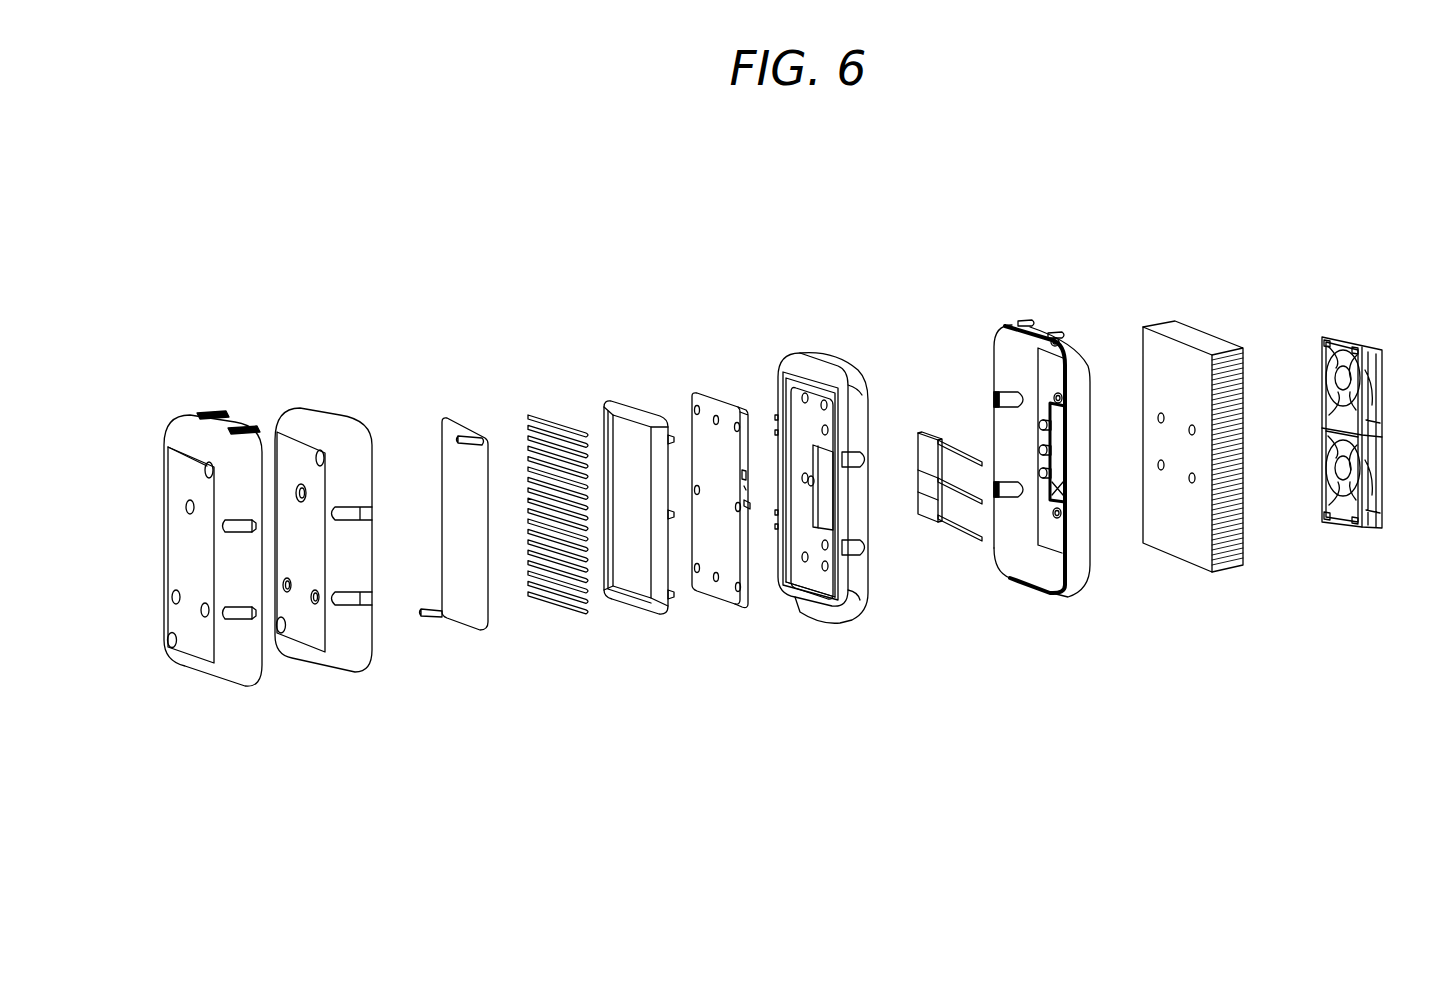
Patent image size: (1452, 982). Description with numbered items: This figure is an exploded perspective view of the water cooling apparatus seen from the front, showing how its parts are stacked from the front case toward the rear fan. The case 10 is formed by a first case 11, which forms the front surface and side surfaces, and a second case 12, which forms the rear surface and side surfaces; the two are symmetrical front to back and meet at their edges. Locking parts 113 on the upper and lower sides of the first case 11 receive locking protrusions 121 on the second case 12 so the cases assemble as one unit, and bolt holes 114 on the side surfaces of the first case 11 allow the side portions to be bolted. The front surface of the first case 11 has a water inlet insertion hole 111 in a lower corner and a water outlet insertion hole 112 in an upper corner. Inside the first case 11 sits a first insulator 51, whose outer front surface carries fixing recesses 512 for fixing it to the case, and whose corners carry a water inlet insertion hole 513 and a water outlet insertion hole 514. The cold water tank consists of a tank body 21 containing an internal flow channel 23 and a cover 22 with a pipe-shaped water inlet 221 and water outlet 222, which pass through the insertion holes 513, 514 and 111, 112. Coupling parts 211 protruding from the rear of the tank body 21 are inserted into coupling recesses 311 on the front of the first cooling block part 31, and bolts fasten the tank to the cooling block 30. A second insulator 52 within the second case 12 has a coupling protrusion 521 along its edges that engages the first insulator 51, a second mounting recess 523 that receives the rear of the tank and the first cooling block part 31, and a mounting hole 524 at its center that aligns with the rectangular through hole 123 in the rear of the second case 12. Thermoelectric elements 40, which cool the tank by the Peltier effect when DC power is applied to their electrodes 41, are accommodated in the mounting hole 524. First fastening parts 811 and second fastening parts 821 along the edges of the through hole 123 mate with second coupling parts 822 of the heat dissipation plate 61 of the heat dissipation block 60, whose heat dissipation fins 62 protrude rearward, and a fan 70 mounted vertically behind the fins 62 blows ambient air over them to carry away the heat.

The case 10 is at (170, 539).
The first case 11 is at (162, 455).
The water inlet insertion hole 111 is at (167, 639).
The water outlet insertion hole 112 is at (206, 473).
The locking part 113 is at (244, 427).
The bolt hole 114 is at (242, 620).
The second case 12 is at (1015, 454).
The locking protrusion 121 is at (1023, 320).
The through hole 123 is at (1053, 502).
The tank body 21 is at (637, 466).
The coupling part 211 is at (670, 433).
The cover 22 is at (461, 521).
The water inlet 221 is at (430, 618).
The water outlet 222 is at (470, 438).
The internal flow channel 23 is at (540, 408).
The cooling block 30 is at (715, 496).
The first cooling block part 31 is at (716, 602).
The coupling recess 311 is at (737, 422).
The thermoelectric element 40 is at (940, 536).
The electrode 41 is at (960, 505).
The first insulator 51 is at (313, 534).
The fixing recess 512 is at (299, 485).
The water inlet insertion hole 513 is at (282, 633).
The water outlet insertion hole 514 is at (320, 450).
The second insulator 52 is at (817, 486).
The coupling protrusion 521 is at (793, 598).
The second mounting recess 523 is at (820, 572).
The mounting hole 524 is at (823, 470).
The heat dissipation block 60 is at (1194, 411).
The heat dissipation plate 61 is at (1175, 362).
The heat dissipation fin 62 is at (1226, 352).
The fan 70 is at (1382, 398).
The first fastening part 811 is at (1060, 395).
The second fastening part 821 is at (1039, 473).
The second coupling part 822 is at (1161, 472).